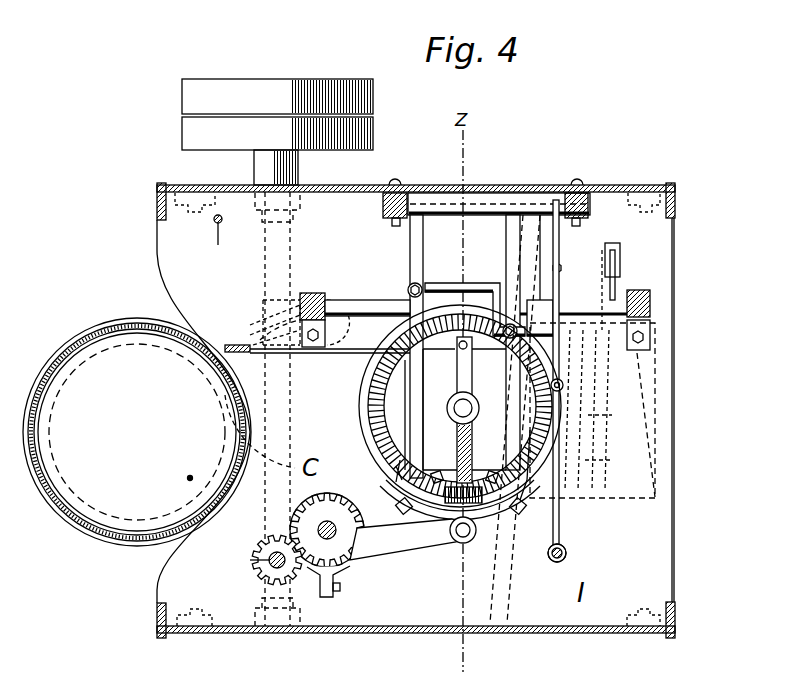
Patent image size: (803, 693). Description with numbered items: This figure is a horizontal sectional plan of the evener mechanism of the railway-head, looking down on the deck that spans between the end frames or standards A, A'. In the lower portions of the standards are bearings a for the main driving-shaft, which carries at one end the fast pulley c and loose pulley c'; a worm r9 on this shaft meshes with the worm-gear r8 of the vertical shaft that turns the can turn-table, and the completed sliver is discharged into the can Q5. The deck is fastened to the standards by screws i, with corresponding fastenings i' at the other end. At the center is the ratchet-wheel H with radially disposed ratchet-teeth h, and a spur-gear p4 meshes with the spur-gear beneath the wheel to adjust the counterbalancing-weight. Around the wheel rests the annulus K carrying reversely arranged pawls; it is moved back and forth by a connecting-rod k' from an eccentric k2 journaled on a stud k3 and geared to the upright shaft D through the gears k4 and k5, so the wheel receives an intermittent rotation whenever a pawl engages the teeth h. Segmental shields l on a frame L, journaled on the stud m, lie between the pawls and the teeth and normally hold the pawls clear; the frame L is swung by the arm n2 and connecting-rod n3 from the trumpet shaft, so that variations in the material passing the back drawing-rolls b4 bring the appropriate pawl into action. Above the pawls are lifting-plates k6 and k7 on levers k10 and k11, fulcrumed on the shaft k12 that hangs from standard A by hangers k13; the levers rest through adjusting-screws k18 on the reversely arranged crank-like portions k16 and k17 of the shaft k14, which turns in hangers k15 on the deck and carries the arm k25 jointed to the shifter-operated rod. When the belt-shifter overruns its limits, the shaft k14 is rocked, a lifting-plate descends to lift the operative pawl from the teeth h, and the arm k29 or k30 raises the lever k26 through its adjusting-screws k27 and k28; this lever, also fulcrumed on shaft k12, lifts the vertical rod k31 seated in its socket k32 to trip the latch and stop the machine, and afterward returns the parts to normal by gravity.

The fast pulley c is at (277, 96).
The loose pulley c' is at (277, 133).
The bearings a is at (303, 215).
The screws i is at (195, 409).
The frame foot i' is at (643, 409).
The spur-gear p4 is at (227, 243).
The end frame or standard A is at (416, 168).
The end frame or standard A' is at (416, 655).
The shaft k12 is at (385, 217).
The hangers k13 is at (395, 193).
The lever k10 is at (398, 263).
The lever k11 is at (506, 262).
The can Q5 is at (137, 432).
The arm n2 is at (250, 352).
The connecting-rod n3 is at (345, 354).
The back pair of drawing-rolls b4 is at (258, 322).
The worm r9 is at (290, 308).
The worm-gear r8 is at (340, 326).
The hangers k15 is at (313, 293).
The shaft k14 is at (366, 300).
The crank-like portion k16 is at (440, 300).
The adjusting-screws k18 is at (411, 286).
The crank-like portion k17 is at (512, 300).
The adjusting-screw k28 is at (562, 268).
The arm k25 is at (620, 283).
The arm k30 is at (610, 280).
The lever k26 is at (560, 520).
The adjusting-screw k27 is at (564, 385).
The arm k29 is at (572, 380).
The vertical rod k31 is at (567, 554).
The socket k32 is at (548, 553).
The annulus K is at (441, 406).
The ratchet-teeth h is at (397, 415).
The lifting-plate k6 is at (396, 454).
The lifting-plate k7 is at (531, 461).
The stud m is at (472, 408).
The frame L is at (458, 380).
The ratchet-wheel H is at (457, 469).
The segmentally-shaped shields l is at (487, 477).
The stud k3 is at (320, 528).
The gear k4 is at (340, 508).
The eccentric k2 is at (340, 555).
The gear k5 is at (262, 556).
The upright shaft D is at (246, 554).
The connecting-rod k' is at (413, 541).